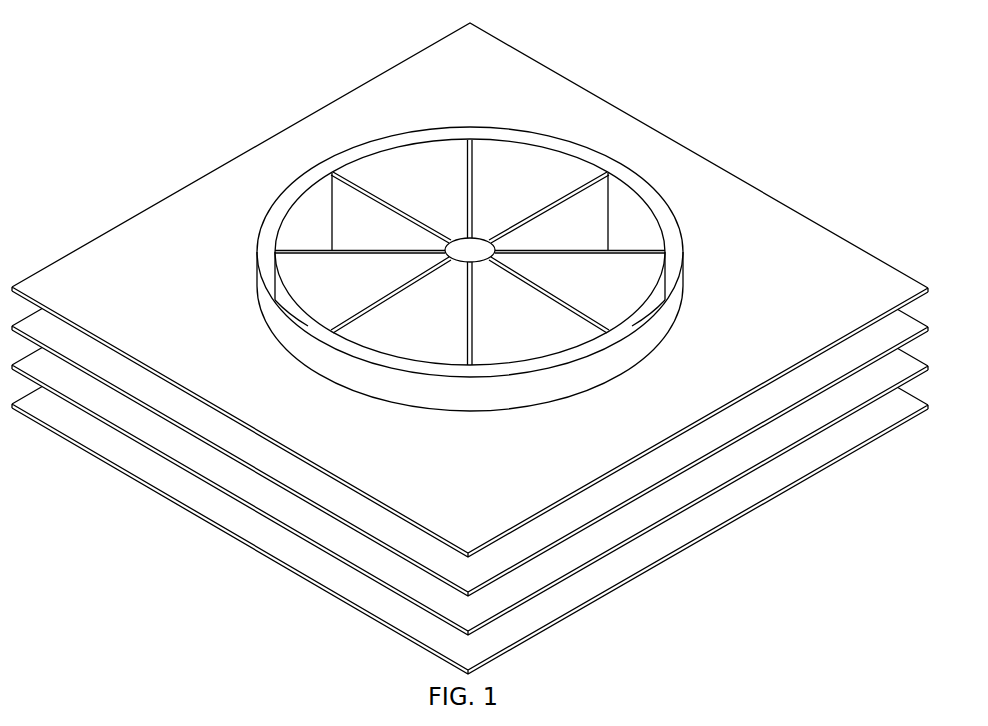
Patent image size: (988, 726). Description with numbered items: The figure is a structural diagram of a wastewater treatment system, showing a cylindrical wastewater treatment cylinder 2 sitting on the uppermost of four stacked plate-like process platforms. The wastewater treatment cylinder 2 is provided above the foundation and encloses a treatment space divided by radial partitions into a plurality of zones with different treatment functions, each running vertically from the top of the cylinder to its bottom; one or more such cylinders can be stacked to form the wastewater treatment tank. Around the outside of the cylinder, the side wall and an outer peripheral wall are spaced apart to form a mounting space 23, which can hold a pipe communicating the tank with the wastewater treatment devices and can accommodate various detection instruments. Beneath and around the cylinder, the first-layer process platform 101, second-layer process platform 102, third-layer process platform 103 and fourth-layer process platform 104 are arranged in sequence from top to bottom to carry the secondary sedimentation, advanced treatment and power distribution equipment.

The wastewater treatment cylinder 2 is at (553, 210).
The mounting space 23 is at (658, 208).
The first-layer process platform 101 is at (755, 390).
The second-layer process platform 102 is at (715, 449).
The third-layer process platform 103 is at (672, 513).
The fourth-layer process platform 104 is at (628, 577).